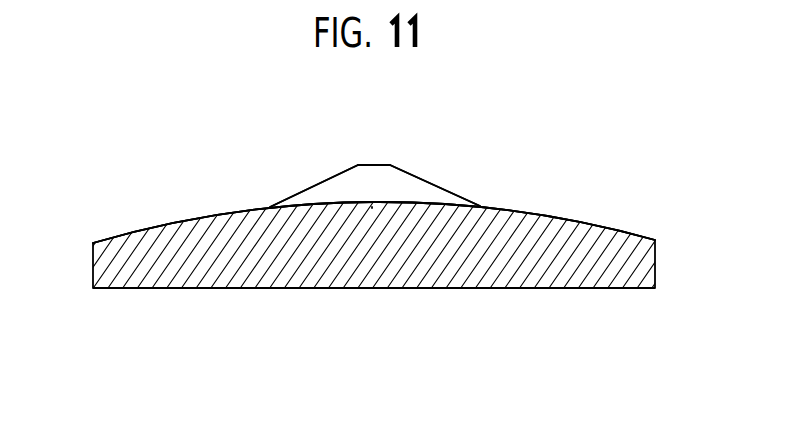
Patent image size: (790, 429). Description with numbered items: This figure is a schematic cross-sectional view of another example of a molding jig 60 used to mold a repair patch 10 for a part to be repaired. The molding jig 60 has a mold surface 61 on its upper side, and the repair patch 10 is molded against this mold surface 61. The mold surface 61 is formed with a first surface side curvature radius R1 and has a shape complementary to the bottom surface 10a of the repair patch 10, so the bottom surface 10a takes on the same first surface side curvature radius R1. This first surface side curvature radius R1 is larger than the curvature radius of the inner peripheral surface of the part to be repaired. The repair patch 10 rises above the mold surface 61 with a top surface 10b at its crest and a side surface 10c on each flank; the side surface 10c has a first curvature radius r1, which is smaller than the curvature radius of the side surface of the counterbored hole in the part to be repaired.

The molding jig 60 is at (620, 232).
The mold surface 61 is at (170, 220).
The first surface side curvature radius R1 is at (540, 215).
The repair patch 10 is at (434, 187).
The bottom surface 10a is at (372, 200).
The top surface 10b is at (372, 163).
The side surface 10c is at (452, 192).
The first curvature radius r1 is at (305, 188).